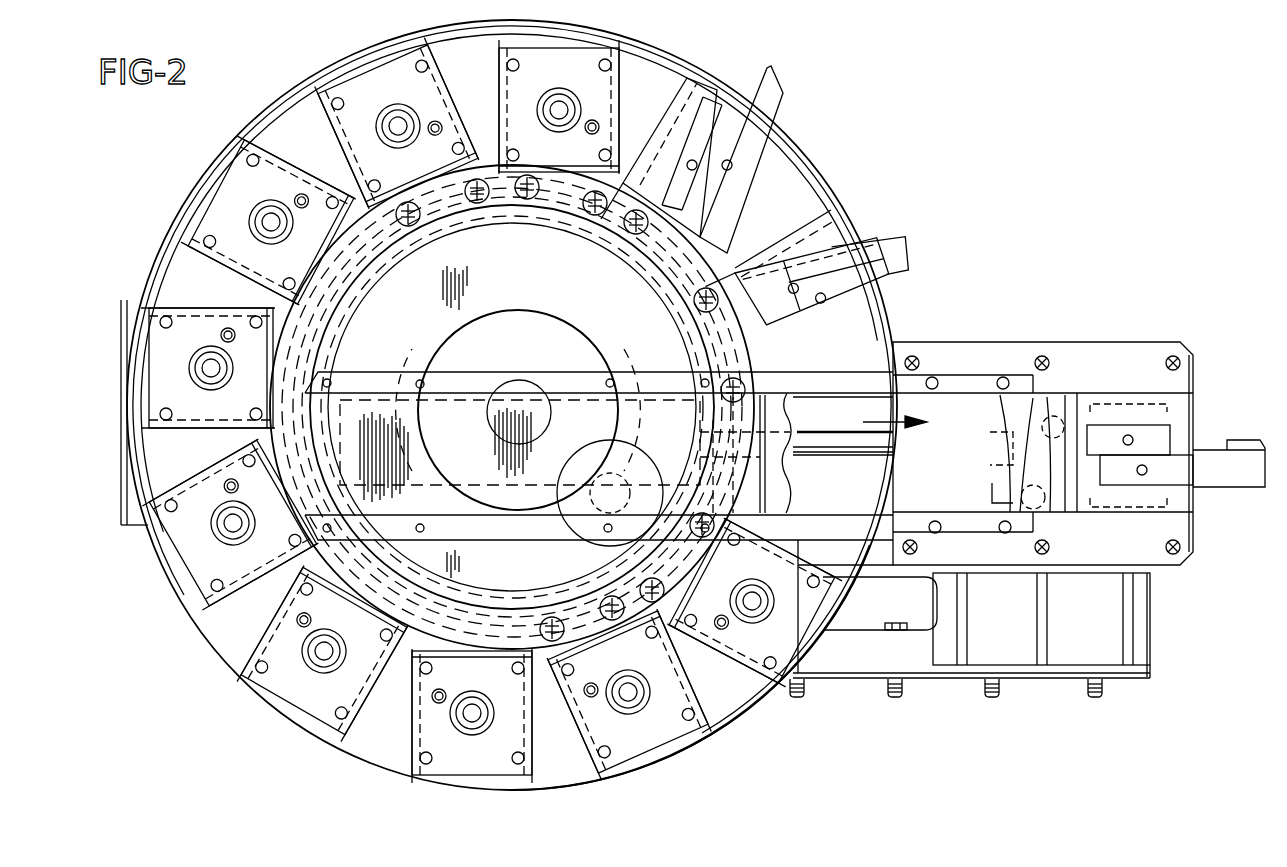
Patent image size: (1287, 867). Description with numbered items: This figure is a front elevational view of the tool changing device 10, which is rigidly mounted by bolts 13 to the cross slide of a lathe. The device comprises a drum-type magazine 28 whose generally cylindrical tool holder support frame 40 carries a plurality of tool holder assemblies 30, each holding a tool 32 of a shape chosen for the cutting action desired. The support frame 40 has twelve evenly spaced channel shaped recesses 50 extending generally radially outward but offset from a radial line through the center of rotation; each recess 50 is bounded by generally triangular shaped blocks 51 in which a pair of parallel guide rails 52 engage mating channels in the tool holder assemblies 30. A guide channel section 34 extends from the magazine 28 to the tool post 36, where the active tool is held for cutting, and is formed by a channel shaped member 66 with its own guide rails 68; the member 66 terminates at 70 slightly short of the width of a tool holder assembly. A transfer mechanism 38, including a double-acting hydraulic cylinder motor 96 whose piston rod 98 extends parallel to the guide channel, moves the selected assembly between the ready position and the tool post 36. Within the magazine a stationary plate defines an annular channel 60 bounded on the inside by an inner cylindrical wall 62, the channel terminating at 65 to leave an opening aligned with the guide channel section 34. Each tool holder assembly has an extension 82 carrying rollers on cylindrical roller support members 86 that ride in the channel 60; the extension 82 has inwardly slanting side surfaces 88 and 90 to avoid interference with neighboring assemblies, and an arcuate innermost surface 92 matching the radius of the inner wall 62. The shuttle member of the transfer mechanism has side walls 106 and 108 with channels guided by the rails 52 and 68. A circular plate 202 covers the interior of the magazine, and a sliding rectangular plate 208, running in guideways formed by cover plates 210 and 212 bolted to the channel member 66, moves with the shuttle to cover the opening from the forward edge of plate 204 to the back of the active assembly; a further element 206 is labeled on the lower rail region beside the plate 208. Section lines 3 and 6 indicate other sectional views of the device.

The section line 3- 3 is at (72, 458).
The section line 6- 6 is at (1125, 342).
The tool changing device 10 is at (893, 213).
The bolts 13 is at (893, 700).
The drum-type magazine 28 is at (205, 648).
The tool holder assemblies 30 is at (240, 190).
The tool 32 is at (780, 108).
The guide channel section 34 is at (972, 355).
The tool post 36 is at (1157, 367).
The transfer mechanism 38 is at (666, 415).
The tool holder support frame 40 is at (247, 640).
The channel shaped recesses 50 is at (850, 240).
The triangular shaped blocks 51 is at (382, 742).
The guide rails 52 is at (705, 95).
The annular channel 60 is at (488, 623).
The inner cylindrical wall 62 is at (666, 271).
The channel termination 65 is at (745, 453).
The channel shaped member 66 is at (873, 562).
The guide rails 68 is at (848, 405).
The termination of channel shaped member 70 is at (1067, 427).
The extension 82 is at (1055, 530).
The cylindrical roller support members 86 is at (480, 205).
The side surface 88 is at (1017, 500).
The side surface 90 is at (1033, 400).
The innermost surface 92 is at (1007, 457).
The double-acting hydraulic cylinder motor 96 is at (400, 393).
The piston rod 98 is at (853, 453).
The side wall 106 is at (1030, 540).
The side wall 108 is at (995, 414).
The circular plate 202 is at (556, 275).
The plate 204 is at (462, 383).
The lower rail 206 is at (333, 380).
The sliding rectangular plate 208 is at (635, 420).
The cover plate 210 is at (973, 527).
The cover plate 212 is at (978, 387).